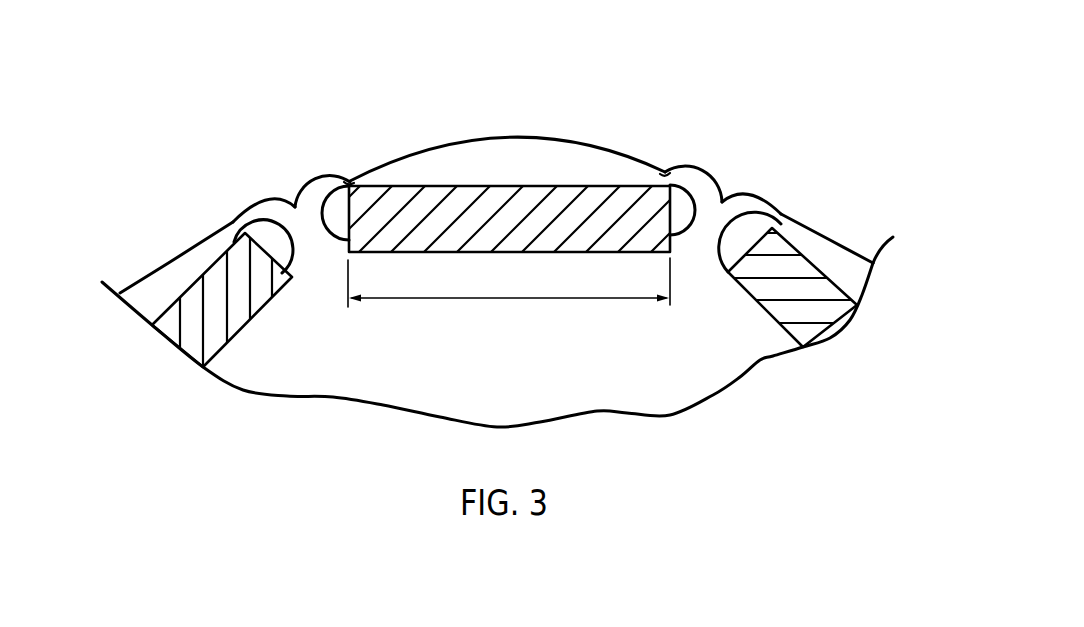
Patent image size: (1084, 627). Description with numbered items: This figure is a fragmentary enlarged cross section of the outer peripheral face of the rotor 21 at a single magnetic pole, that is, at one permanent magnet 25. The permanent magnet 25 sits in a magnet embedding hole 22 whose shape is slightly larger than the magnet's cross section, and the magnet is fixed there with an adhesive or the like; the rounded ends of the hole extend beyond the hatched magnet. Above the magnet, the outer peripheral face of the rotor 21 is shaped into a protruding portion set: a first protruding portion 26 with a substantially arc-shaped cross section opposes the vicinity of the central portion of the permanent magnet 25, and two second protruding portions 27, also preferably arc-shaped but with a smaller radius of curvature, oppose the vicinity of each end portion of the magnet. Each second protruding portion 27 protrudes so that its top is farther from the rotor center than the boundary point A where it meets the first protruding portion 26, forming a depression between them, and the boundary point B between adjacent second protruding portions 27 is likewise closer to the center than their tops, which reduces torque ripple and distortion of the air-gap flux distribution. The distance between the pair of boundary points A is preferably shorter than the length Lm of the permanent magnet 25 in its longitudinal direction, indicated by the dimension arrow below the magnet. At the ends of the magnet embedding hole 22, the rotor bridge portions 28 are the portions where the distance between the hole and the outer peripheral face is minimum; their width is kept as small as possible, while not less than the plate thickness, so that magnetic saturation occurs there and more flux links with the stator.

The rotor 21 is at (208, 122).
The magnet embedding hole 22 is at (331, 237).
The permanent magnet 25 is at (570, 217).
The first protruding portion 26 is at (508, 137).
The second protruding portion 27 is at (252, 202).
The rotor bridge portion 28 is at (348, 180).
The boundary point A is at (350, 178).
The boundary point B is at (293, 205).
The length of the permanent magnet Lm is at (507, 302).